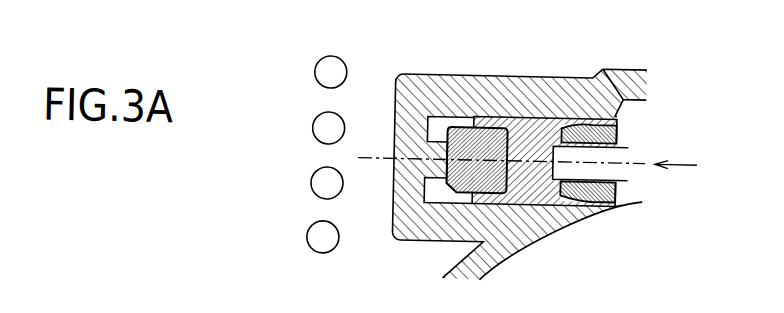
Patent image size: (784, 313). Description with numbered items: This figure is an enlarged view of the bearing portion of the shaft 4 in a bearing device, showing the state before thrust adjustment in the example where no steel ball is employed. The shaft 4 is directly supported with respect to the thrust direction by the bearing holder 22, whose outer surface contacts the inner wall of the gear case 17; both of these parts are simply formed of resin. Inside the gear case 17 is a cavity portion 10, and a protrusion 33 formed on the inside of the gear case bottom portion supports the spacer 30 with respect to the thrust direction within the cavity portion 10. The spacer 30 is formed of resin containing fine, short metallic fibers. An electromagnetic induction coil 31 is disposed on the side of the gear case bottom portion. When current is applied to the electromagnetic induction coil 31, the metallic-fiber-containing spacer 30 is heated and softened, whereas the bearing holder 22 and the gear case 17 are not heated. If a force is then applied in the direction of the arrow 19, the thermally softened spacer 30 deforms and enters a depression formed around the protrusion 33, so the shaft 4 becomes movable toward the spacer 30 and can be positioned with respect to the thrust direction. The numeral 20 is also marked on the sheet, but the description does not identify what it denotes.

The cavity portion 10 is at (438, 189).
The gear case 17 is at (610, 66).
The bearing holder 22 is at (527, 122).
The spacer 30 is at (471, 138).
The protrusion 33 is at (438, 143).
The shaft 4 is at (625, 150).
The arrow 19 is at (680, 183).
The electromagnetic induction coil 31 is at (322, 245).
The lower portion 20 is at (444, 310).